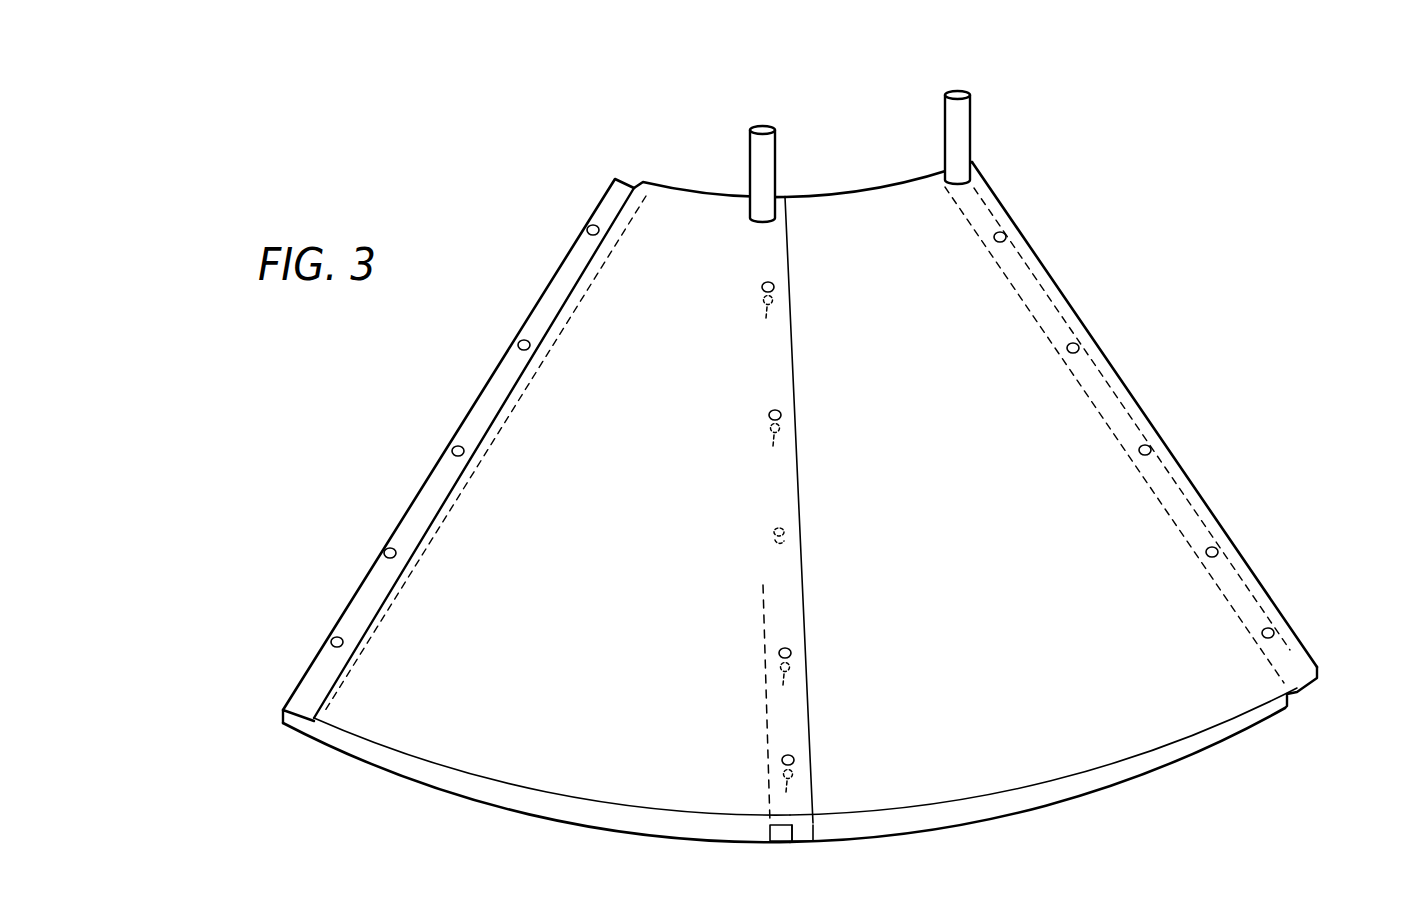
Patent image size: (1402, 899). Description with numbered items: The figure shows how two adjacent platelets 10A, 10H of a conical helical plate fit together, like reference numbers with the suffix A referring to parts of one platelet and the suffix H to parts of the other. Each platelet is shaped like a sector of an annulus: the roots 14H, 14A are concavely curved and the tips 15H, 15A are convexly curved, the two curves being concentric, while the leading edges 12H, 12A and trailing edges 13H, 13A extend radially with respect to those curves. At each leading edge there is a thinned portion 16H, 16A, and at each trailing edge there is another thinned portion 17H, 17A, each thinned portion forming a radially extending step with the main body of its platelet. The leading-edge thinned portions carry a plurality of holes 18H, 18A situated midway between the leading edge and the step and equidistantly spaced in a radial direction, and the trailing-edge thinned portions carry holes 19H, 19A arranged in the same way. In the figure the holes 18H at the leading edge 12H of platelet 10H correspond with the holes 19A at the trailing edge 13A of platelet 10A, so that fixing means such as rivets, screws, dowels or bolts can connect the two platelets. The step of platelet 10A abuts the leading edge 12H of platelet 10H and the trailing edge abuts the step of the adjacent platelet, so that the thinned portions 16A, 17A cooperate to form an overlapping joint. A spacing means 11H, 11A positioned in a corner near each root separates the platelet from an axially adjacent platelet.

The platelet 10H is at (594, 541).
The platelet 10A is at (1055, 534).
The spacing means 11H is at (763, 127).
The spacing means 11A is at (955, 92).
The leading edge 12H is at (803, 520).
The leading edge 12A is at (1118, 375).
The trailing edge 13H is at (527, 315).
The trailing edge 13A is at (763, 592).
The root 14H is at (647, 180).
The root 14A is at (847, 183).
The tip 15H is at (393, 760).
The tip 15A is at (1128, 778).
The thinned portion 16H is at (787, 827).
The thinned portion 16A is at (1302, 690).
The thinned portion 17H is at (305, 690).
The thinned portion 17A is at (800, 830).
The holes 18H is at (774, 286).
The holes 18A is at (1003, 232).
The holes 19H is at (590, 225).
The holes 19A is at (760, 338).